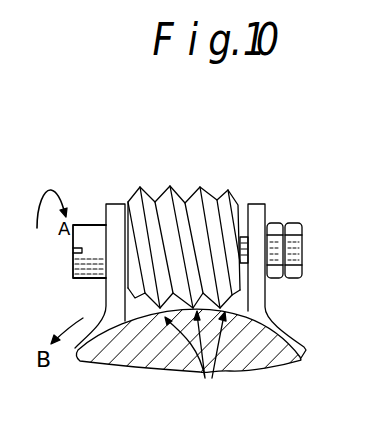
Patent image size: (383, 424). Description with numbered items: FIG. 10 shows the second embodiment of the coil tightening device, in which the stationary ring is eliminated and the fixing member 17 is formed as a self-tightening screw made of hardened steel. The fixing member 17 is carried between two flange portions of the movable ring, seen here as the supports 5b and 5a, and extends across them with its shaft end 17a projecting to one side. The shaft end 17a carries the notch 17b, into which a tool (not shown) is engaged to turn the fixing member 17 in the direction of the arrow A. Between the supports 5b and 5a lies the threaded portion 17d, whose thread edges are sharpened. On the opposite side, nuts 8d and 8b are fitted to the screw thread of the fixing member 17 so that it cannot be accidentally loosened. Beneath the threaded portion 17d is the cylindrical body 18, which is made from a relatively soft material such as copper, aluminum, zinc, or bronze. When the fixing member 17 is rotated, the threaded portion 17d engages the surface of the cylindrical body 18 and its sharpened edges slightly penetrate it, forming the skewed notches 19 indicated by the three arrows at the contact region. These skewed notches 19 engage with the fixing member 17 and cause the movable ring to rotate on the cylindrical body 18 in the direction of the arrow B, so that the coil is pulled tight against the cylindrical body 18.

The fixing member 17 is at (155, 163).
The worm shaft end 17a is at (86, 222).
The notch 17b is at (73, 251).
The threaded portion 17d is at (180, 190).
The channel 5a is at (255, 204).
The bracket 5b is at (115, 204).
The nut 8d is at (274, 222).
The nut 8b is at (290, 222).
The cylindrical body 18 is at (306, 363).
The skewed notches 19 is at (195, 358).